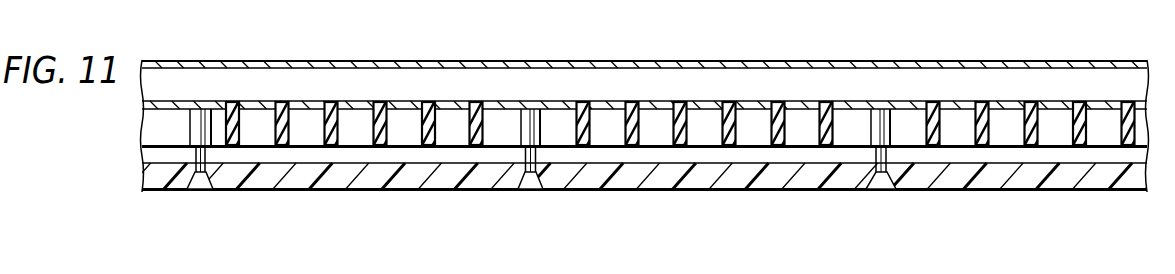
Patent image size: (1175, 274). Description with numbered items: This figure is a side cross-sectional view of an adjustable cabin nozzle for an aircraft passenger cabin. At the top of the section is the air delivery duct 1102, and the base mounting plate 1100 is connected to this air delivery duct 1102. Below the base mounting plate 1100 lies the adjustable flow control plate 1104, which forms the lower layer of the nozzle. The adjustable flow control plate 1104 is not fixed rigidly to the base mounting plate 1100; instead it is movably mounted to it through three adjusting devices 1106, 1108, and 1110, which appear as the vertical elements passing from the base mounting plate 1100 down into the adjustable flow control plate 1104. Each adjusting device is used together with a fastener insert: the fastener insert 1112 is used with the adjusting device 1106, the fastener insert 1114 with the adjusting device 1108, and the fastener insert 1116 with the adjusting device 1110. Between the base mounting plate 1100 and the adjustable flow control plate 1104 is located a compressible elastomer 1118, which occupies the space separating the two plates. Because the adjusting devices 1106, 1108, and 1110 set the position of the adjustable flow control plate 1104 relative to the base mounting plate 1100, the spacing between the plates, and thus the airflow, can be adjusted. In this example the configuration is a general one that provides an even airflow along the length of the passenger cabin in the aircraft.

The base mounting plate 1100 is at (1007, 133).
The air delivery duct 1102 is at (387, 62).
The adjustable flow control plate 1104 is at (327, 192).
The adjusting device 1106 is at (198, 192).
The adjusting device 1108 is at (528, 192).
The adjusting device 1110 is at (883, 191).
The fastener insert 1112 is at (197, 127).
The fastener insert 1114 is at (528, 117).
The fastener insert 1116 is at (879, 117).
The compressible elastomer 1118 is at (757, 155).